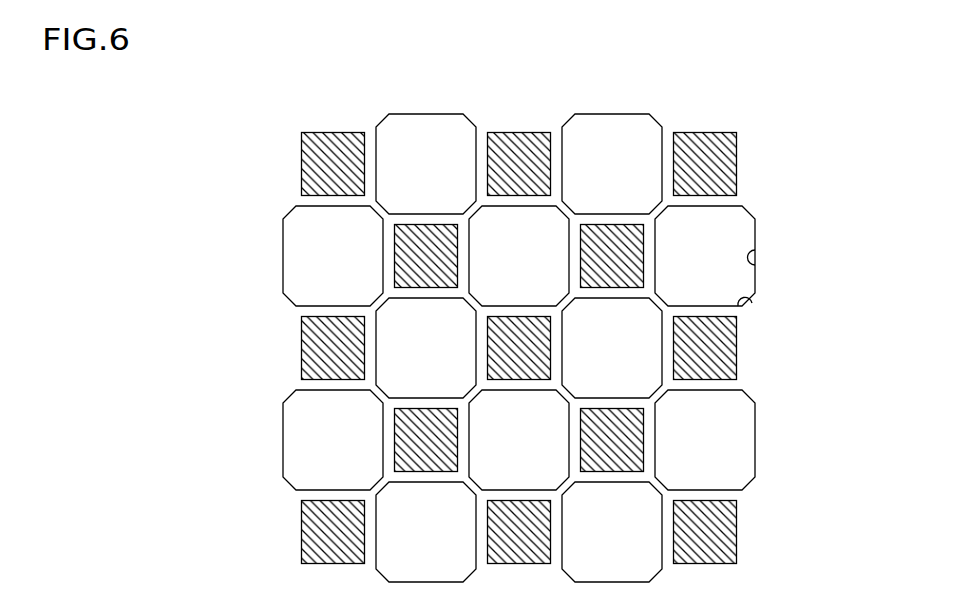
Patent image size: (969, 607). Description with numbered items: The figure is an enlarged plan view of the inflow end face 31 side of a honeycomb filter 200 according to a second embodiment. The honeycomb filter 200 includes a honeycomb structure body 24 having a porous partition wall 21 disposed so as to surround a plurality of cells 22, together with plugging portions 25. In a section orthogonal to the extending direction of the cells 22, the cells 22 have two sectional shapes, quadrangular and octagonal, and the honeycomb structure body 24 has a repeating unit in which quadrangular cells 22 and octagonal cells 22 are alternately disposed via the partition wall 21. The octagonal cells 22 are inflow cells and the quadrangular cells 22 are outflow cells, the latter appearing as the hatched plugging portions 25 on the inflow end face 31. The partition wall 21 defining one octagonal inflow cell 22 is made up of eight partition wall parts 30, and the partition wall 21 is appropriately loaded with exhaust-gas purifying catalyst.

The honeycomb filter 200 is at (832, 32).
The inflow end face 31 is at (339, 98).
The plugging portion 25 is at (527, 167).
The partition wall 21 is at (667, 182).
The honeycomb structure body 24 is at (781, 132).
The cell 22 is at (698, 257).
The partition wall part 30 is at (757, 262).